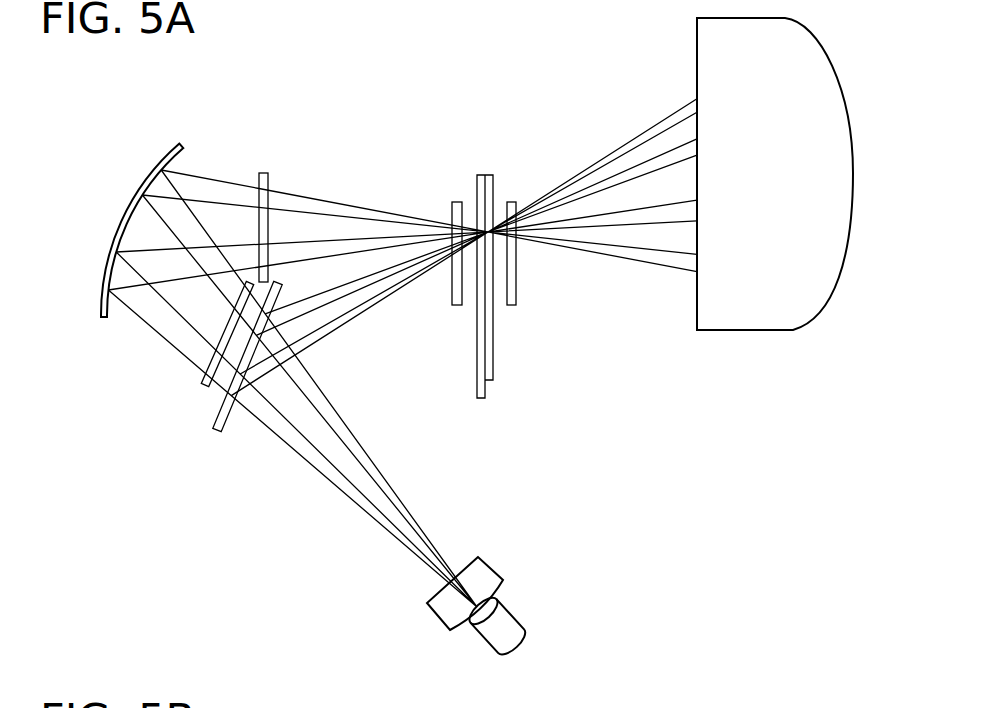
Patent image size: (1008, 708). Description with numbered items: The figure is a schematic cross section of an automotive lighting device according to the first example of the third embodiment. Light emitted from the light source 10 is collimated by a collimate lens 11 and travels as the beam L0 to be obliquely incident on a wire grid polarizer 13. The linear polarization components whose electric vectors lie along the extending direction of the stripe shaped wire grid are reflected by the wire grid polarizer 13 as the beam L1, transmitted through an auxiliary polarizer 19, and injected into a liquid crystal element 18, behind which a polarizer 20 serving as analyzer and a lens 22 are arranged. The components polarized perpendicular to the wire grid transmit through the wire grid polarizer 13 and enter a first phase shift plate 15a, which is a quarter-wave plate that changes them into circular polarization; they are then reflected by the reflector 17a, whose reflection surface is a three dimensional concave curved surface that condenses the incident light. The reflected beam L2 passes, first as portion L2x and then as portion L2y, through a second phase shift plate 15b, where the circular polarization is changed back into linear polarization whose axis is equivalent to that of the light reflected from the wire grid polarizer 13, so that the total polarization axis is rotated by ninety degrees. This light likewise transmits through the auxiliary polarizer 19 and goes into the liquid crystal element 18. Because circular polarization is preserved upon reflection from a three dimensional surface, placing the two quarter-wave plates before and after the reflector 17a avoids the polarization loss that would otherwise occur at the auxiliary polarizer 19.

The light source 10 is at (513, 615).
The collimate lens 11 is at (488, 562).
The wire grid polarizer 13 is at (217, 431).
The first (λ/4) phase shift plate 15a is at (205, 385).
The second (λ/4) phase shift plate 15b is at (268, 178).
The reflector 17a is at (173, 145).
The liquid crystal element 18 is at (487, 158).
The auxiliary polarizer 19 is at (457, 307).
The polarizer (analyzer) 20 is at (514, 304).
The lens 22 is at (830, 50).
The excitation light beam L0 is at (336, 433).
The first light beam L1 is at (332, 306).
The second light beam L2 is at (402, 266).
The second light beam before lens 15b L2x is at (150, 312).
The second light beam after lens 15b L2y is at (373, 217).